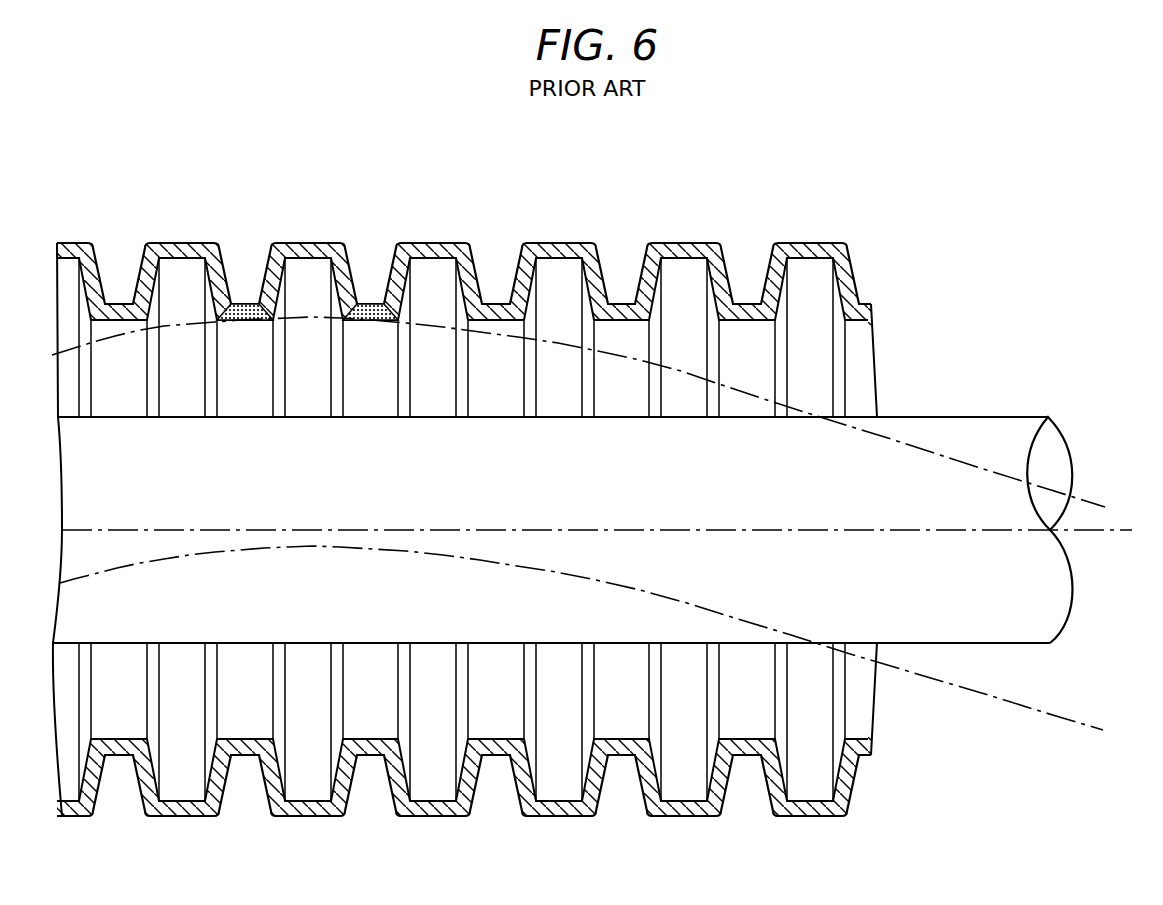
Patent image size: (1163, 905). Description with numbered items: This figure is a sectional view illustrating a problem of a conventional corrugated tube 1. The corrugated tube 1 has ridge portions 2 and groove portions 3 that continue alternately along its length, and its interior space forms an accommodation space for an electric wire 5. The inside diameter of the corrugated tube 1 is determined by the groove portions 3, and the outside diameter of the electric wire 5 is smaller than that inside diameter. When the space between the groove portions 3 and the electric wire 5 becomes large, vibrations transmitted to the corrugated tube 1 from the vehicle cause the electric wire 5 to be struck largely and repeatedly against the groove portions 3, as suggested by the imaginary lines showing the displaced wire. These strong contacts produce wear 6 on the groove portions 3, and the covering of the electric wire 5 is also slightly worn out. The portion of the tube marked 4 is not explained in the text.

The corrugated tube 1 is at (852, 264).
The ridge portions 2 is at (184, 243).
The groove portions 3 is at (230, 302).
The tube body end portion 4 is at (857, 370).
The electric wire 5 is at (1063, 428).
The wear 6 is at (250, 302).